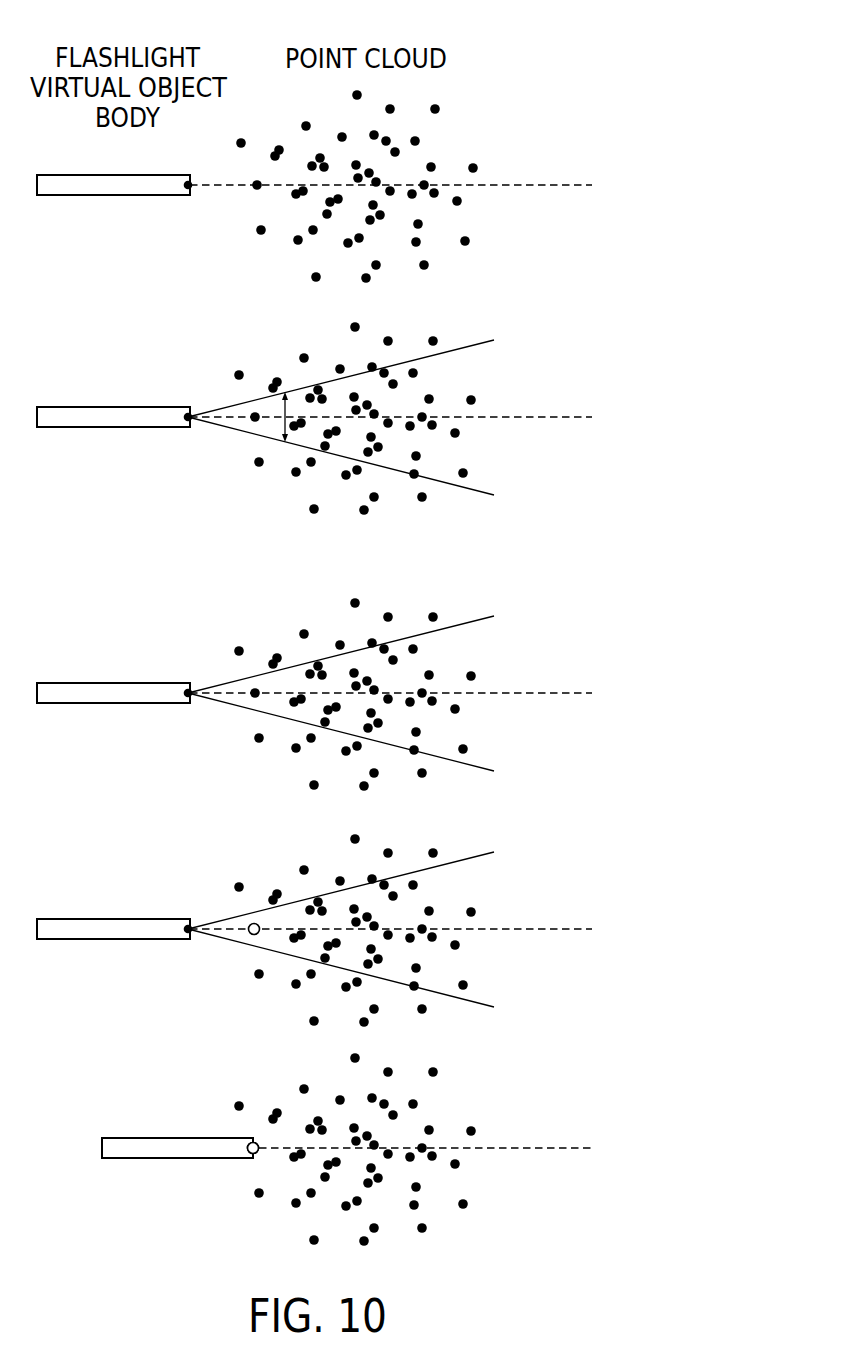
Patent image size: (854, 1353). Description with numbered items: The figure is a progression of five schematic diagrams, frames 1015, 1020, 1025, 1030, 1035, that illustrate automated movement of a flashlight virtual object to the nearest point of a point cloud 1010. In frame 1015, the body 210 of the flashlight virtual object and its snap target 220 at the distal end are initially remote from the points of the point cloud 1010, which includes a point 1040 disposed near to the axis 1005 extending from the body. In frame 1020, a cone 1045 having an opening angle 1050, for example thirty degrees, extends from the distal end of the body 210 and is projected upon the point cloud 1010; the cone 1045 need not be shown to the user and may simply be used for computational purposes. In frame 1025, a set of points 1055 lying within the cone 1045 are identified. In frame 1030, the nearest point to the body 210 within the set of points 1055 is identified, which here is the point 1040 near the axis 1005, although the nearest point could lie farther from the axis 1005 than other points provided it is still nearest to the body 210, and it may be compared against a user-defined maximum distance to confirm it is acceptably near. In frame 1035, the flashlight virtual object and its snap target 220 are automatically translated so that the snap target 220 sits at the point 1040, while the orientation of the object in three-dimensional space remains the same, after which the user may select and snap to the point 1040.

The body 210 is at (44, 196).
The snap target 220 is at (191, 196).
The axis 1005 is at (560, 182).
The point cloud 1010 is at (482, 142).
The frame 1015 is at (645, 175).
The frame 1020 is at (645, 407).
The frame 1025 is at (645, 683).
The frame 1030 is at (645, 919).
The frame 1035 is at (645, 1138).
The point 1040 is at (258, 180).
The cone 1045 is at (480, 340).
The opening angle 1050 is at (287, 411).
The set of points 1055 is at (480, 663).